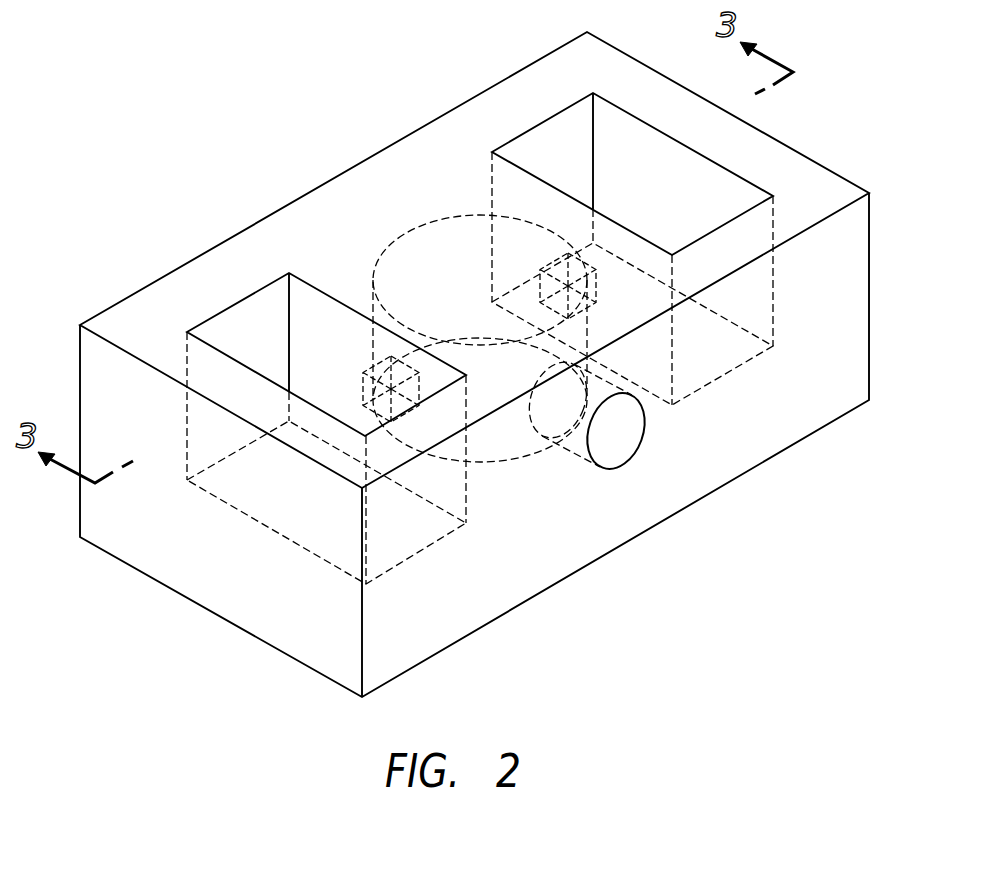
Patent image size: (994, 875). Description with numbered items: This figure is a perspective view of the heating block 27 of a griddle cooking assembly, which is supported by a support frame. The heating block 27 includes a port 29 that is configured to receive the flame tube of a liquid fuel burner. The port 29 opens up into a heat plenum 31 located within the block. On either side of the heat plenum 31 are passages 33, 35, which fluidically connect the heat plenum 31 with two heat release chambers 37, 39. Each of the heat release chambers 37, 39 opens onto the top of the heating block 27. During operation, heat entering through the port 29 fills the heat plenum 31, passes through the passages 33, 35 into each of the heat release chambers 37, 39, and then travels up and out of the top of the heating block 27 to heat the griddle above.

The heating block 27 is at (327, 110).
The port 29 is at (636, 451).
The heat plenum 31 is at (391, 248).
The passage 33 is at (363, 390).
The passage 35 is at (552, 262).
The heat release chamber 37 is at (187, 355).
The heat release chamber 39 is at (773, 303).